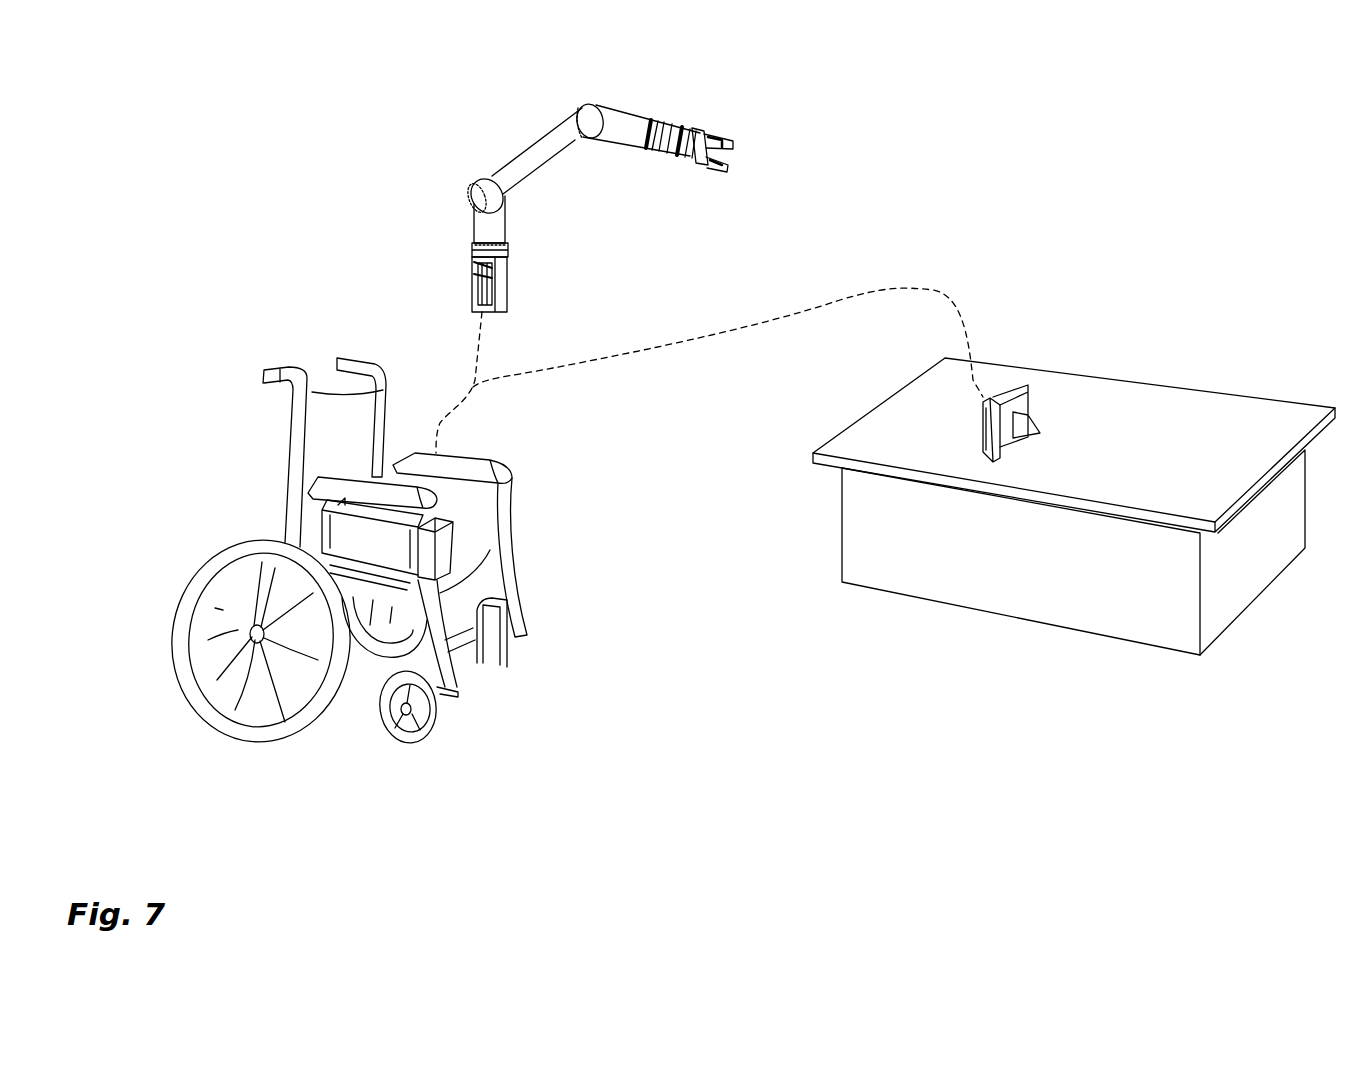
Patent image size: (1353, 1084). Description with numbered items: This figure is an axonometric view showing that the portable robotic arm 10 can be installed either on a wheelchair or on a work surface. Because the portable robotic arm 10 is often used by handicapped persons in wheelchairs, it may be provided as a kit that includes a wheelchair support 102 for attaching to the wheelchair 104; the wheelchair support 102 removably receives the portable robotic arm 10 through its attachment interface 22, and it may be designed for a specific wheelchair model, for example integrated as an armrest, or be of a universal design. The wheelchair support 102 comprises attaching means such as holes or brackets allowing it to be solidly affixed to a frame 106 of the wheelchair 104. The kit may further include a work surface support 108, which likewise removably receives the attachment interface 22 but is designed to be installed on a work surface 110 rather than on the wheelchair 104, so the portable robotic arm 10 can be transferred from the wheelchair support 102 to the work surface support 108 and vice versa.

The portable robotic arm 10 is at (552, 188).
The attachment interface 22 is at (470, 282).
The wheelchair support 102 is at (443, 552).
The wheelchair 104 is at (394, 564).
The frame 106 is at (423, 573).
The work surface support 108 is at (1015, 403).
The work surface 110 is at (1145, 410).